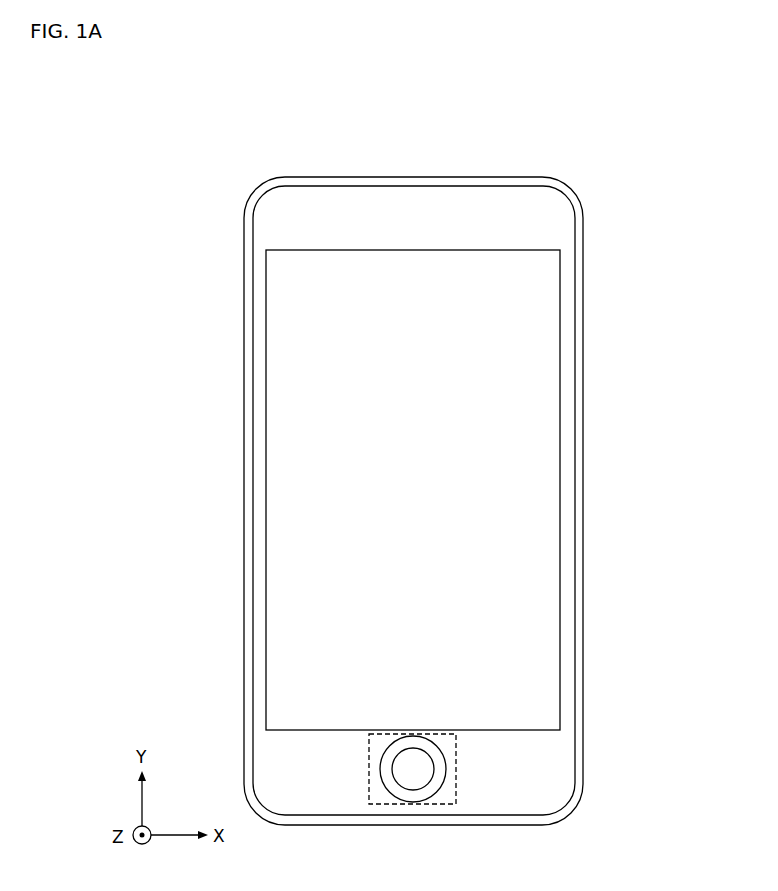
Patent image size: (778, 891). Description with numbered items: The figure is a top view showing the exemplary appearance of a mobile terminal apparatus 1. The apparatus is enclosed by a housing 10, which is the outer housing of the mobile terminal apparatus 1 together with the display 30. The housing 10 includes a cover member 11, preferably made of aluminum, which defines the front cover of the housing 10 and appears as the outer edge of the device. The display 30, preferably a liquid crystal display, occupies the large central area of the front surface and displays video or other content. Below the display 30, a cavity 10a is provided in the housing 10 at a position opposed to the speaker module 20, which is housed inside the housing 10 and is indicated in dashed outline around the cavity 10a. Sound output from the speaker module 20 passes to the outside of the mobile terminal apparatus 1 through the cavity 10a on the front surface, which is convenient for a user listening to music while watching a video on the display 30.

The mobile terminal apparatus 1 is at (613, 164).
The housing 10 is at (585, 278).
The cover member 11 is at (575, 352).
The display 30 is at (560, 600).
The speaker module 20 is at (369, 767).
The cavity 10a is at (440, 795).